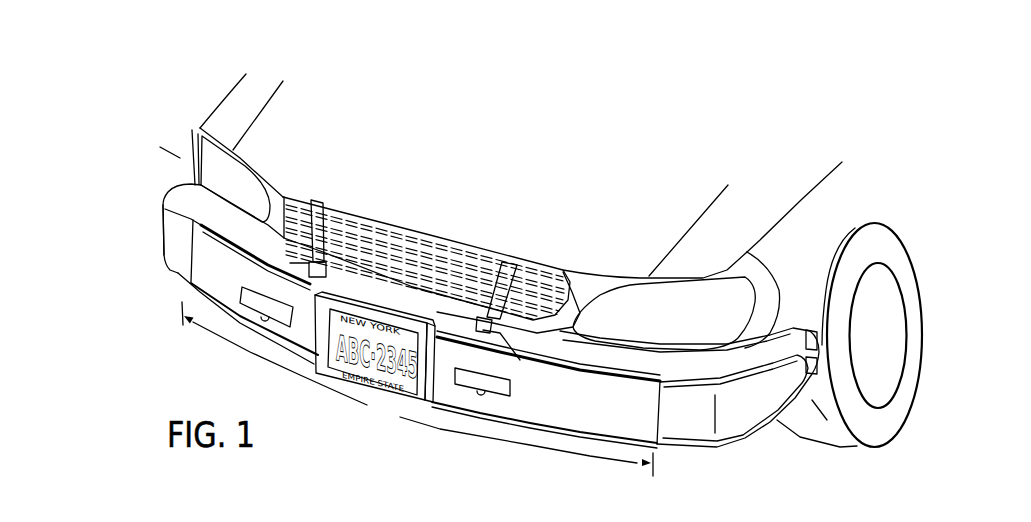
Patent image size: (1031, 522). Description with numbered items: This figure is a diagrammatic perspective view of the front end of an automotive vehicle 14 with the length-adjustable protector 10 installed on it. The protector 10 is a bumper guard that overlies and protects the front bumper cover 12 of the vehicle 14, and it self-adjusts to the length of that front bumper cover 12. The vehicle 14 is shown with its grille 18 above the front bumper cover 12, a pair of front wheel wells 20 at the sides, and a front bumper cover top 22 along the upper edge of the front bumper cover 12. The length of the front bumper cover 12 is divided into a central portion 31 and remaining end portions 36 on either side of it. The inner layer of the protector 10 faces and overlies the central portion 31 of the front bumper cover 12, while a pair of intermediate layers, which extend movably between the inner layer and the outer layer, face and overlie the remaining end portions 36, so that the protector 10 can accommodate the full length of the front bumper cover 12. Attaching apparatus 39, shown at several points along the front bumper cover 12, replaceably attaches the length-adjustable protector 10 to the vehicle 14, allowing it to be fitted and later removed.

The length-adjustable protector 10 is at (192, 342).
The front bumper cover 12 is at (181, 238).
The vehicle 14 is at (226, 100).
The grille 18 is at (363, 233).
The front wheel wells 20 is at (841, 322).
The front bumper cover top 22 is at (584, 353).
The central portion 31 is at (415, 392).
The end portions 36 is at (160, 163).
The attaching apparatus 39 is at (293, 210).